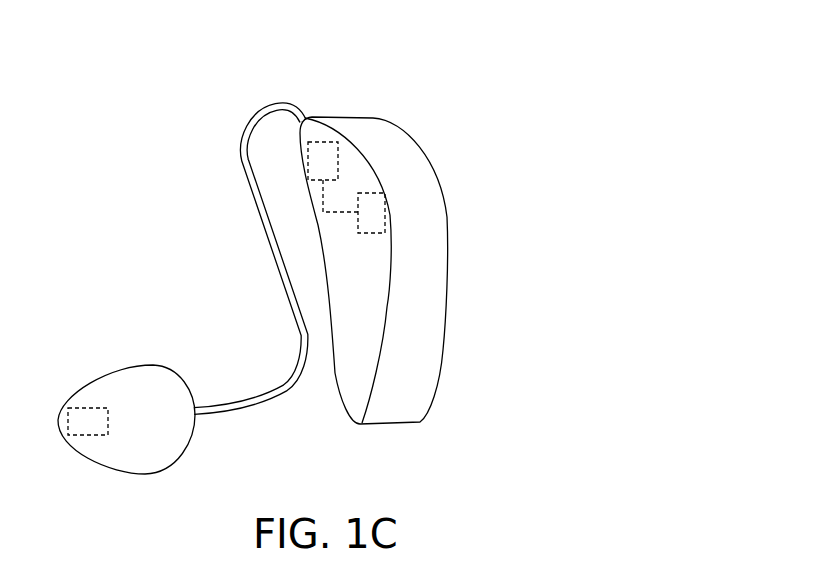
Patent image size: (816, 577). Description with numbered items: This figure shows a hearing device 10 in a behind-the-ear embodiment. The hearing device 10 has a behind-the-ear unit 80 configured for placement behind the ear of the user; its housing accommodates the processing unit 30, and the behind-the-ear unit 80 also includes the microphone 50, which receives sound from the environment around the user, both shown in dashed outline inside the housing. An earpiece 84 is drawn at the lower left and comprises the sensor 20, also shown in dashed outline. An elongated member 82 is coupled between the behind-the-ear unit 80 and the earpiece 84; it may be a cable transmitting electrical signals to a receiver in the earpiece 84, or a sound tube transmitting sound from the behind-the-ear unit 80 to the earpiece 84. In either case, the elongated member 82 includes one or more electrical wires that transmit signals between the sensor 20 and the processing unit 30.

The hearing device 10 is at (434, 46).
The sensor 20 is at (87, 435).
The processing unit 30 is at (338, 163).
The microphone 50 is at (385, 222).
The behind-the-ear (BTE) unit 80 is at (432, 335).
The elongated member 82 is at (247, 168).
The earpiece 84 is at (147, 385).